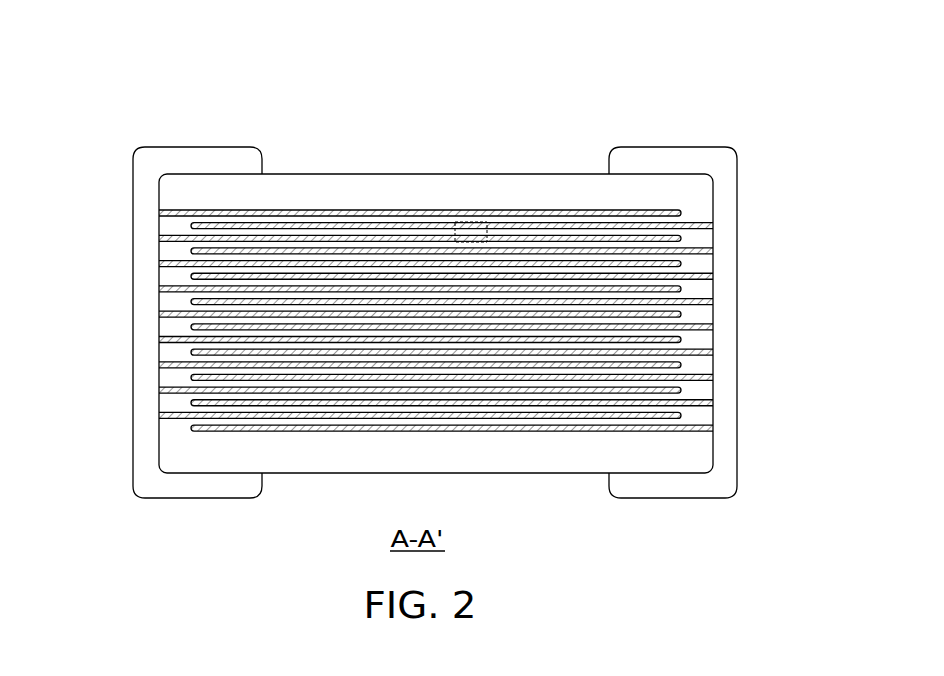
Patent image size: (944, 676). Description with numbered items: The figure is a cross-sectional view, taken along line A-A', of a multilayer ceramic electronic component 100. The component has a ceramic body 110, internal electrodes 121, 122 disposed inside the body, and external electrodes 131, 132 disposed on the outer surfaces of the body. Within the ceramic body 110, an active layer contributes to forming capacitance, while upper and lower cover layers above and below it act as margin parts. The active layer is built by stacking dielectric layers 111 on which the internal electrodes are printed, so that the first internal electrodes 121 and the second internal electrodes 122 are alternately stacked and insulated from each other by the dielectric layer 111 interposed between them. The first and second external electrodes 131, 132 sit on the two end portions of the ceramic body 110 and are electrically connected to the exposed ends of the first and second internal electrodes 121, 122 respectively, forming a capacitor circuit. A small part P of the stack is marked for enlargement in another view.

The multilayer ceramic electronic component 100 is at (397, 47).
The ceramic body 110 is at (323, 175).
The dielectric layer 111 is at (680, 213).
The first internal electrode 121 is at (177, 236).
The second internal electrode 122 is at (688, 253).
The first external electrode 131 is at (152, 167).
The second external electrode 132 is at (653, 158).
The part P is at (483, 242).